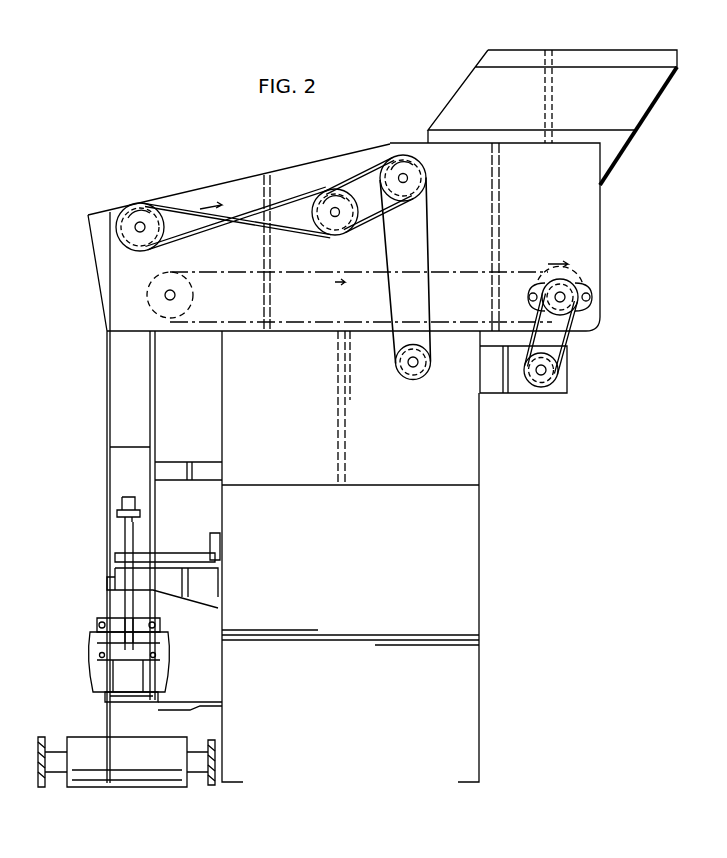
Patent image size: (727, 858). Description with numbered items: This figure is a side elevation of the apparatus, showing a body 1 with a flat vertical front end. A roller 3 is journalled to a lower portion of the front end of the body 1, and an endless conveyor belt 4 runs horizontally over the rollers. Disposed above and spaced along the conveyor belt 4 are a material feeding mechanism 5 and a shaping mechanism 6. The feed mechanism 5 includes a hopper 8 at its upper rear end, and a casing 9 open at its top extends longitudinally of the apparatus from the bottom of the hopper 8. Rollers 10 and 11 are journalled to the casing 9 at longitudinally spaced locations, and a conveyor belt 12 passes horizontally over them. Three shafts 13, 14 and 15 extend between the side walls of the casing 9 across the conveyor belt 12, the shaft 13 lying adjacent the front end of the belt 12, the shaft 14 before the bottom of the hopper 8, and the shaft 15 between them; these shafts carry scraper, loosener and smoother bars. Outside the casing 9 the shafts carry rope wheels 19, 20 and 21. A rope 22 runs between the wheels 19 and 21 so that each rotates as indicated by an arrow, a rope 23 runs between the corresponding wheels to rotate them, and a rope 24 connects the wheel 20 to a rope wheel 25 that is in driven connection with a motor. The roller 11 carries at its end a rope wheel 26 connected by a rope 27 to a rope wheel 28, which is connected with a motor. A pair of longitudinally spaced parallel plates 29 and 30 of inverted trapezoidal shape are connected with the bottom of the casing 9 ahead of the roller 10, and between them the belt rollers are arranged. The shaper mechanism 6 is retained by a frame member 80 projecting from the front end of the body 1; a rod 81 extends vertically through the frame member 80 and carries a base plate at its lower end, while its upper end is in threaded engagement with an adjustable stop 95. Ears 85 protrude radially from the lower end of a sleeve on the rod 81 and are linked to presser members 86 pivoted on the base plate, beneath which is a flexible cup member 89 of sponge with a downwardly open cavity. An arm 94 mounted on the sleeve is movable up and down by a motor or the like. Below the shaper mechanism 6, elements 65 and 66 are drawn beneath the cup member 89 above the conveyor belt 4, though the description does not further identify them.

The body 1 is at (479, 530).
The roller 3 is at (128, 787).
The endless conveyor belt 4 is at (70, 735).
The material feeding mechanism 5 is at (225, 171).
The shaping mechanism 6 is at (126, 639).
The hopper 8 is at (583, 50).
The casing 9 is at (600, 215).
The roller 10 is at (192, 297).
The roller 11 is at (545, 276).
The conveyor belt 12 is at (300, 276).
The shaft 13 is at (138, 233).
The shaft 14 is at (409, 180).
The shaft 15 is at (334, 218).
The rope wheel 19 is at (148, 205).
The rope wheel 20 is at (405, 155).
The rope wheel 21 is at (322, 194).
The rope 22 is at (205, 238).
The rope 23 is at (363, 167).
The rope 24 is at (430, 251).
The rope wheel 25 is at (413, 380).
The rope wheel 26 is at (577, 289).
The rope 27 is at (572, 340).
The rope wheel 28 is at (541, 387).
The plate 29 is at (107, 390).
The plate 30 is at (170, 388).
The plate 65 is at (114, 702).
The bar 66 is at (143, 700).
The frame member 80 is at (185, 553).
The rod 81 is at (125, 540).
The ears 85 is at (110, 622).
The presser members 86 is at (118, 670).
The flexible cup member 89 is at (153, 680).
The arm 94 is at (196, 598).
The stop 95 is at (117, 513).